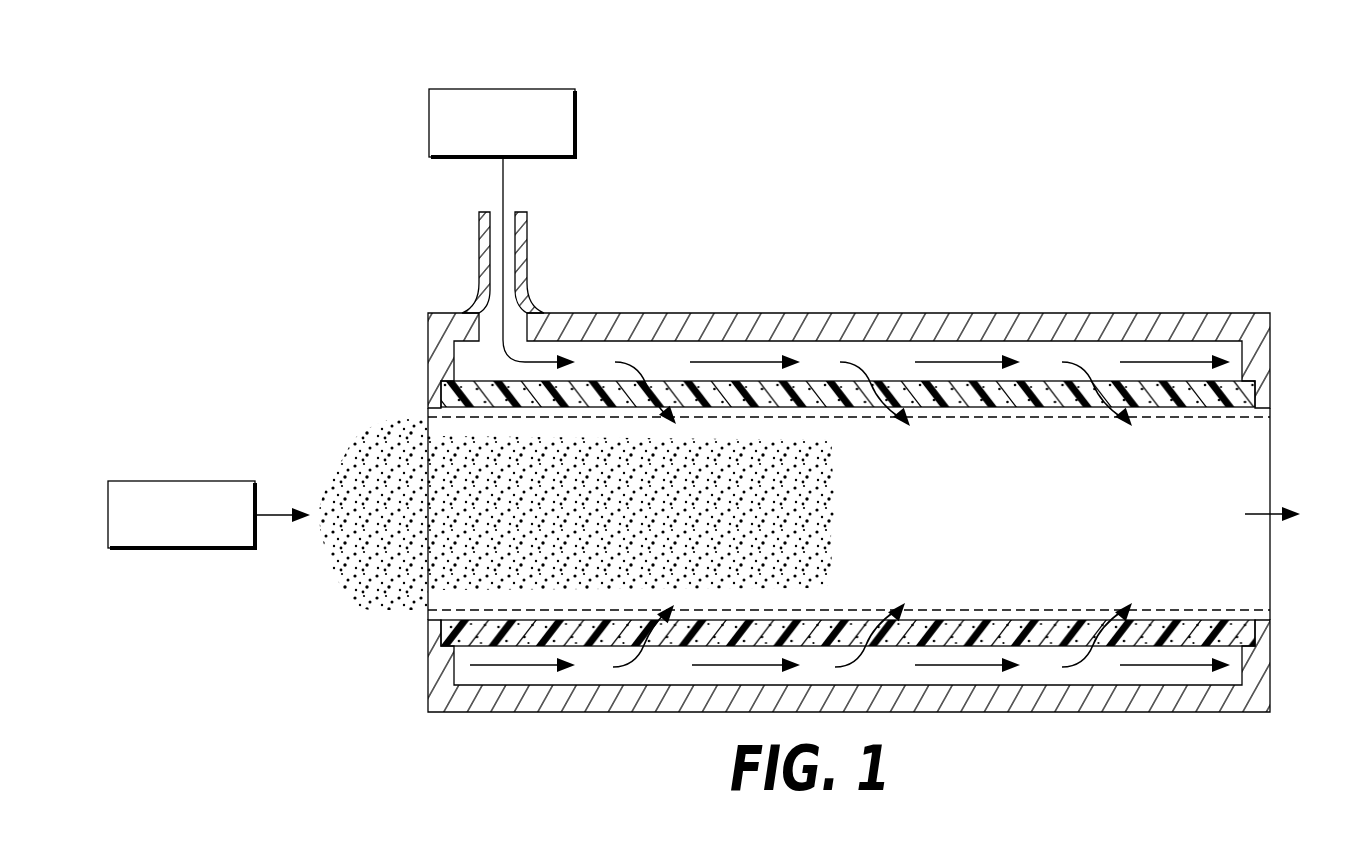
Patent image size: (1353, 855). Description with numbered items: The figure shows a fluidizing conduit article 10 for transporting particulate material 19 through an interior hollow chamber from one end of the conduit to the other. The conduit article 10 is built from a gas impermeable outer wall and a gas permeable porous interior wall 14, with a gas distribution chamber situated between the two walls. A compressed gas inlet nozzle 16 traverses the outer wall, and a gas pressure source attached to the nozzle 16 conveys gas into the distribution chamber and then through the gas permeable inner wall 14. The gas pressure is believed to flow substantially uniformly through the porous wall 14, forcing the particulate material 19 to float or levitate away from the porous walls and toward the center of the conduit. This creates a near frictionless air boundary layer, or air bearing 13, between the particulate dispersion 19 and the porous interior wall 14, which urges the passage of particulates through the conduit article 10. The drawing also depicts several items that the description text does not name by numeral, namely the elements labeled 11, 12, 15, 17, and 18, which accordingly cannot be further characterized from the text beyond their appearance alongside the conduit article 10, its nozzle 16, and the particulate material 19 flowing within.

The conduit article 10 is at (940, 268).
The reaction chamber / flow passage 11 is at (1262, 450).
The housing 12 is at (633, 313).
The air bearing 13 is at (1262, 417).
The gas permeable porous interior wall 14 is at (1246, 383).
The purge gas source 15 is at (518, 88).
The gas nozzle 16 is at (549, 256).
The precursor source 17 is at (178, 481).
The gas plenum channel 18 is at (463, 356).
The particulate material 19 is at (345, 463).